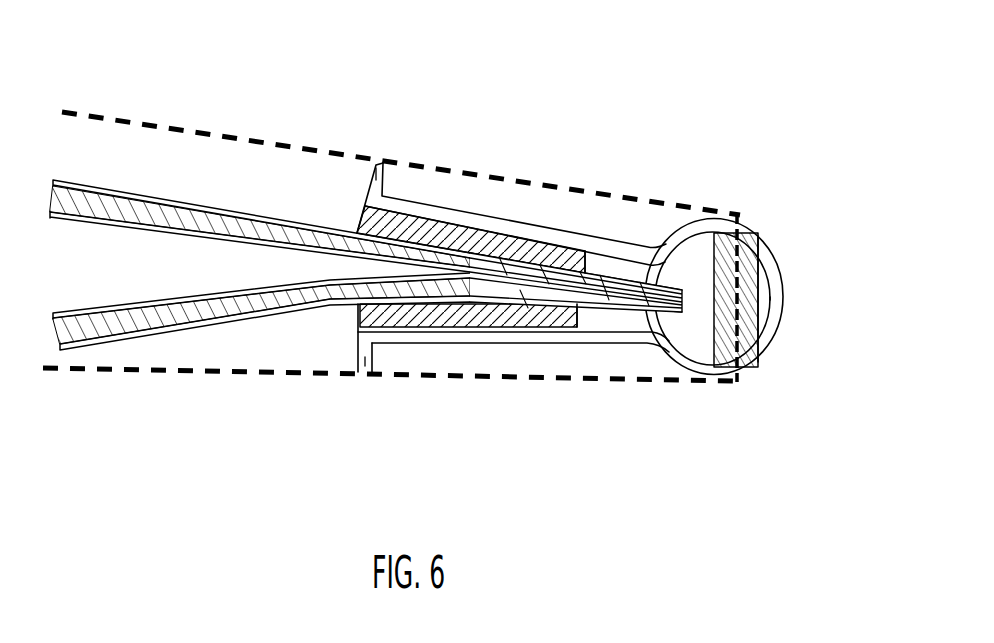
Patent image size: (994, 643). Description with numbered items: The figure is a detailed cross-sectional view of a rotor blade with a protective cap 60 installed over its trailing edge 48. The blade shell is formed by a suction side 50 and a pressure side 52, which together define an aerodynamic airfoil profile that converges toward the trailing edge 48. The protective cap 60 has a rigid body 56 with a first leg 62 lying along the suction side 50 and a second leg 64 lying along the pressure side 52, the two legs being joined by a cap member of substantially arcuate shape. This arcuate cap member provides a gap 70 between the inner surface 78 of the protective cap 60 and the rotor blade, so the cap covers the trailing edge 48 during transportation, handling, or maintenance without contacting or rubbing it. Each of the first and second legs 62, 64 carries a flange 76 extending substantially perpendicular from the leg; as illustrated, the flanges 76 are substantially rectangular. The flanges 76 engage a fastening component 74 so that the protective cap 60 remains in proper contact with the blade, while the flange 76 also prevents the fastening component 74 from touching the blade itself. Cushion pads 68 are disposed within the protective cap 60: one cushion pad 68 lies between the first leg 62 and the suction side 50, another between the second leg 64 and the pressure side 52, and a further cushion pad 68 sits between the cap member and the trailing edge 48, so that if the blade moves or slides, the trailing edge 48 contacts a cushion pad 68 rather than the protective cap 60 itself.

The trailing edge 48 is at (683, 304).
The suction side 50 is at (241, 230).
The pressure side 52 is at (237, 311).
The rigid body 56 is at (712, 384).
The protective cap 60 is at (684, 168).
The first leg 62 is at (475, 215).
The second leg 64 is at (473, 334).
The cushion pad 68 is at (588, 262).
The gap 70 is at (688, 258).
The fastening component 74 is at (142, 116).
The flange 76 is at (378, 176).
The inner surface 78 is at (770, 297).